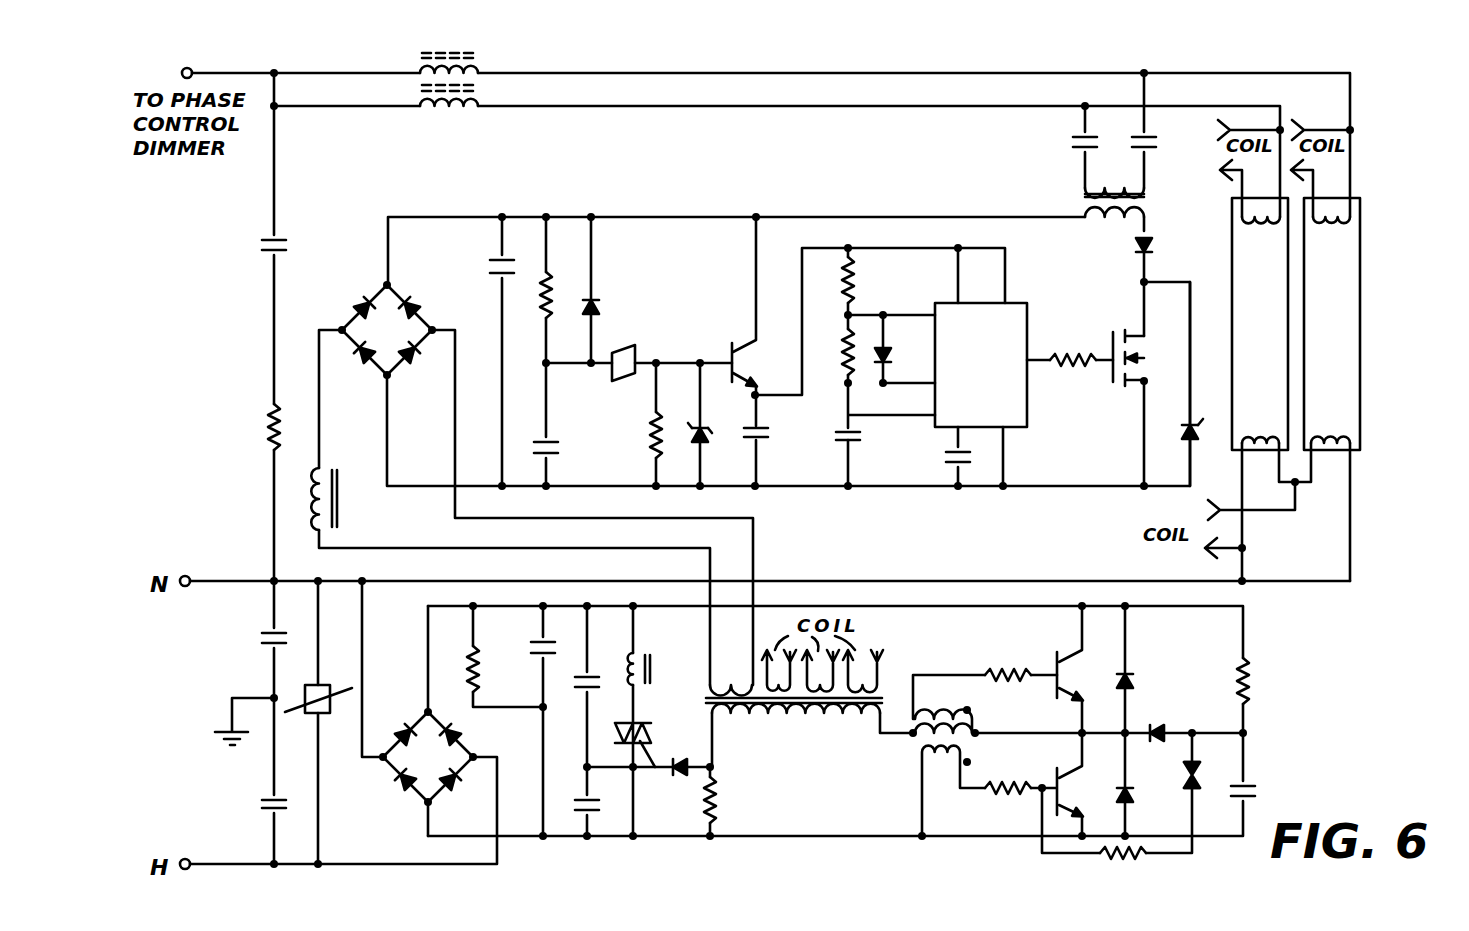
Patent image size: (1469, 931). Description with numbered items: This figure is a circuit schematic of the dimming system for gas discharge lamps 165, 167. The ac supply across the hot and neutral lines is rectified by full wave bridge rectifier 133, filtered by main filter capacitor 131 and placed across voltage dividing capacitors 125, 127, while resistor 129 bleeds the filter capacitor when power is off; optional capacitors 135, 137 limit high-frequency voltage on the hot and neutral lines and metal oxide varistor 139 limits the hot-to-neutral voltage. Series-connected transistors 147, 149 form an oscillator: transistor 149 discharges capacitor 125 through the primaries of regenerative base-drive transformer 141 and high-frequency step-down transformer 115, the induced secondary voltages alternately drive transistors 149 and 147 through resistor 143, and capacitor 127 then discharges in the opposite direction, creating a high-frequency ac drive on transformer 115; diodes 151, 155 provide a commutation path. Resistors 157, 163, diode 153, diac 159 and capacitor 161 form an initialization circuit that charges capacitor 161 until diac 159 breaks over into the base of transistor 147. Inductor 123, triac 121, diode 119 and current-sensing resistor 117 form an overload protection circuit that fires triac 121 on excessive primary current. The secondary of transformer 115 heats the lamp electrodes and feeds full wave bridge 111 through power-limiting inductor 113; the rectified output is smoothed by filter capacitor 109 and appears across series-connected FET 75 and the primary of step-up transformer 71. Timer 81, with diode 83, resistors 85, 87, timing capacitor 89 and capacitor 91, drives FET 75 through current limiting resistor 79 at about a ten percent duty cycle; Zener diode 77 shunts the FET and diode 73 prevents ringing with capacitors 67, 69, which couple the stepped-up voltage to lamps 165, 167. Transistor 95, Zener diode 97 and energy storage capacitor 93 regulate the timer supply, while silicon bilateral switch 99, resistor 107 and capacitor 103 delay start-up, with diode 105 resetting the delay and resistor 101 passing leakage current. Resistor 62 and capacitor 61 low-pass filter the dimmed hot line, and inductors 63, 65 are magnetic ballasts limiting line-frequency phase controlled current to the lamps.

The capacitor 61 is at (278, 238).
The resistor 62 is at (272, 410).
The inductor 63 is at (486, 64).
The inductor 65 is at (480, 100).
The capacitor 67 is at (1080, 138).
The capacitor 69 is at (1148, 143).
The step-up transformer 71 is at (1083, 192).
The diode 73 is at (1135, 248).
The FET 75 is at (1132, 384).
The Zener diode 77 is at (1178, 432).
The current limiting resistor 79 is at (1093, 356).
The timer 81 is at (1028, 303).
The diode 83 is at (886, 345).
The resistor 85 is at (871, 278).
The resistor 87 is at (846, 340).
The timing capacitor 89 is at (872, 444).
The capacitor 91 is at (950, 463).
The energy storage capacitor 93 is at (765, 430).
The transistor 95 is at (733, 350).
The Zener diode 97 is at (708, 430).
The silicon bilateral switch 99 is at (627, 348).
The resistor 101 is at (655, 422).
The capacitor 103 is at (548, 436).
The diode 105 is at (597, 305).
The resistor 107 is at (553, 295).
The filter capacitor 109 is at (495, 262).
The full wave bridge rectifier 111 is at (418, 358).
The inductor 113 is at (342, 478).
The high-frequency step-down transformer 115 is at (817, 712).
The current-sensing resistor 117 is at (718, 786).
The diode 119 is at (683, 775).
The triac 121 is at (665, 725).
The inductor 123 is at (655, 665).
The voltage dividing capacitor 125 is at (578, 672).
The voltage dividing capacitor 127 is at (590, 815).
The resistor 129 is at (478, 642).
The main filter capacitor 131 is at (535, 637).
The full wave bridge rectifier 133 is at (385, 763).
The capacitor 135 is at (268, 808).
The capacitor 137 is at (268, 633).
The metal oxide varistor 139 is at (333, 685).
The regenerative base-drive transformer 141 is at (955, 714).
The resistor 143 is at (990, 672).
The transistor 147 is at (1056, 775).
The transistor 149 is at (1068, 655).
The diode 151 is at (1133, 673).
The diode 153 is at (1160, 725).
The diode 155 is at (1150, 802).
The resistor 157 is at (1250, 690).
The diac 159 is at (1200, 770).
The capacitor 161 is at (1250, 783).
The resistor 163 is at (1098, 853).
The gas discharge lamp 165 is at (1240, 250).
The gas discharge lamp 167 is at (1357, 250).